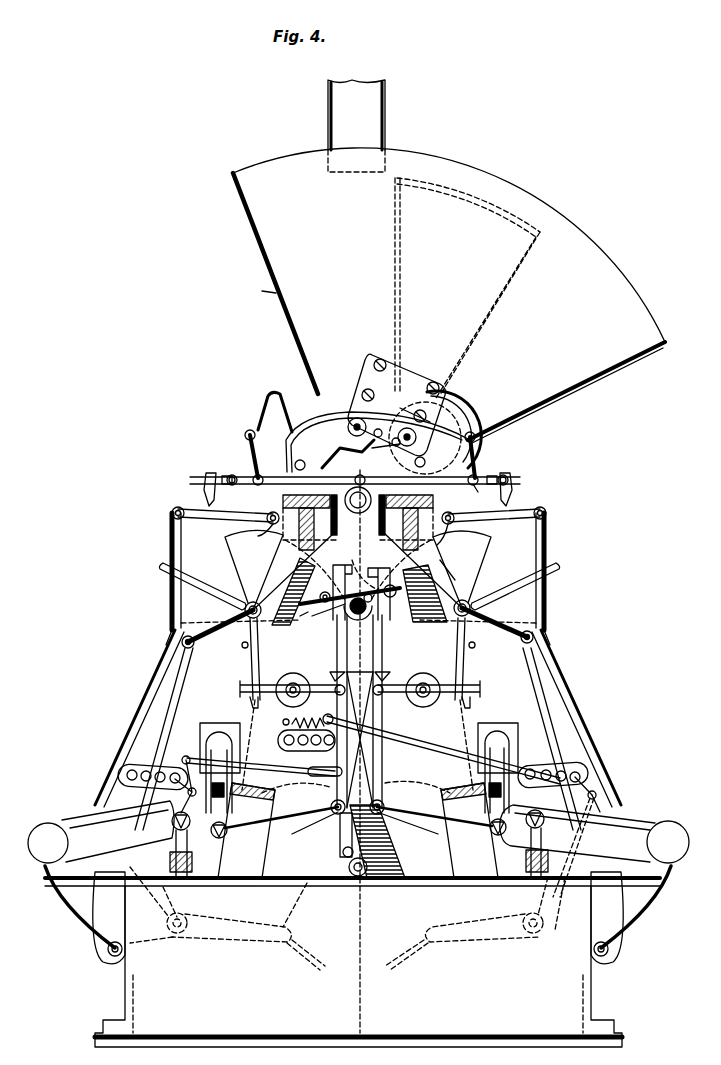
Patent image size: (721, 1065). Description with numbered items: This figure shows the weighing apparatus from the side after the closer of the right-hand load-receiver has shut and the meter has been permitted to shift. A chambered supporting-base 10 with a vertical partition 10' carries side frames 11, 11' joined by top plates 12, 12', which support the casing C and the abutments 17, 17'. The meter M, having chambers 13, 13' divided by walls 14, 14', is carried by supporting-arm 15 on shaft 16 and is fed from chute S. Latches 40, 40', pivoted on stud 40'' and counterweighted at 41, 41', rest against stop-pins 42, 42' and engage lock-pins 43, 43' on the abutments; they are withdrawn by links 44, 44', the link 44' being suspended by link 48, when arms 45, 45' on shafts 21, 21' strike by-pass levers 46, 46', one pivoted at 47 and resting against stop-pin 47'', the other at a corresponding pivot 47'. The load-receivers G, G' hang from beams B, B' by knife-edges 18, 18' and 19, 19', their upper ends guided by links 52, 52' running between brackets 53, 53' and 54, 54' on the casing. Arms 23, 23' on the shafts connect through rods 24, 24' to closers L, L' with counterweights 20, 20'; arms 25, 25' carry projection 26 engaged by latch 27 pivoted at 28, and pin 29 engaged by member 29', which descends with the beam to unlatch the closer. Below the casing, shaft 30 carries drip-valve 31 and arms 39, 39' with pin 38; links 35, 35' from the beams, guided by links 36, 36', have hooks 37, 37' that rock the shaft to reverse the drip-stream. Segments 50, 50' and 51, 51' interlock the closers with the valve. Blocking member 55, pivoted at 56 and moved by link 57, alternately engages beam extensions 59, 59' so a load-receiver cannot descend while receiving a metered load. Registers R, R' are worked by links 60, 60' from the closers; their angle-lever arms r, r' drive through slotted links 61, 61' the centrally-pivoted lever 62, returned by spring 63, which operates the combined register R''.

The chute S is at (356, 126).
The chamber 13 is at (449, 296).
The chamber 13' is at (280, 283).
The meter M is at (257, 293).
The wall 14 is at (468, 288).
The wall 14' is at (415, 285).
The supporting-arm 15 is at (438, 378).
The casing C is at (310, 432).
The abutment 17 is at (459, 429).
The abutment 17' is at (281, 404).
The counterweight 41 is at (351, 414).
The counterweight 41' is at (418, 430).
The stop-pin 42 is at (386, 435).
The stop-pin 42' is at (373, 417).
The latch 40 is at (425, 438).
The latch 40' is at (345, 458).
The stud 40'' is at (415, 406).
The lock-pin 43 is at (435, 466).
The lock-pin 43' is at (301, 453).
The link 44 is at (261, 454).
The link 44' is at (480, 493).
The link 48 is at (476, 450).
The by-pass lever 46 is at (521, 489).
The by-pass lever 46' is at (202, 489).
The pivot 47 is at (525, 470).
The pivot 47' is at (218, 472).
The stop-pin 47'' is at (380, 474).
The shaft 16 is at (358, 500).
The top plate 12 is at (423, 545).
The top plate 12' is at (289, 552).
The link 52 is at (497, 522).
The link 52' is at (222, 523).
The bracket 53 is at (500, 579).
The bracket 53' is at (220, 579).
The bracket 54 is at (421, 556).
The bracket 54' is at (294, 556).
The arm 45 is at (515, 584).
The arm 45' is at (202, 586).
The transverse shaft 21 is at (477, 595).
The transverse shaft 21' is at (260, 600).
The arm 23 is at (497, 620).
The arm 23' is at (217, 626).
The load-receiver G is at (576, 718).
The load-receiver G' is at (139, 718).
The rod 24 is at (564, 739).
The rod 24' is at (164, 739).
The arm 25 is at (480, 704).
The arm 25' is at (239, 704).
The pivot 28 is at (290, 665).
The latch 27 is at (242, 690).
The projection 26 is at (252, 698).
The pin 29 is at (360, 679).
The member 29' is at (362, 664).
The link 35 is at (358, 724).
The link 35' is at (377, 697).
The shaft 30 is at (358, 614).
The hook 37 is at (345, 584).
The hook 37' is at (381, 586).
The segment 51 is at (368, 566).
The segment 51' is at (312, 597).
The link 36 is at (345, 603).
The link 36' is at (453, 571).
The arm 39 is at (353, 619).
The arm 39' is at (390, 607).
The pin 38 is at (322, 620).
The drip-valve 31 is at (298, 632).
The side frame 11' is at (357, 601).
The segment 50 is at (462, 569).
The segment 50' is at (254, 570).
The spring 63 is at (303, 713).
The register R'' is at (289, 740).
The slotted link 61 is at (441, 749).
The slotted link 61' is at (261, 762).
The centrally-pivoted lever 62 is at (322, 762).
The extension 59 is at (417, 780).
The extension 59' is at (296, 783).
The register R is at (564, 761).
The register R' is at (152, 769).
The operating-arm r is at (596, 783).
The operating-arm r' is at (180, 780).
The link 60 is at (597, 842).
The link 60' is at (235, 905).
The beam B is at (594, 834).
The beam B' is at (101, 832).
The knife-edge 18 is at (523, 844).
The knife-edge 18' is at (169, 845).
The knife-edge 19 is at (489, 780).
The knife-edge 19' is at (229, 780).
The side frame 11 is at (358, 830).
The supporting-base 10 is at (352, 962).
The vertical partition 10' is at (378, 751).
The blocking member 55 is at (387, 858).
The pivot 56 is at (355, 876).
The link 57 is at (338, 835).
The closer L is at (475, 937).
The closer L' is at (227, 918).
The counterweight 20 is at (631, 915).
The counterweight 20' is at (85, 915).